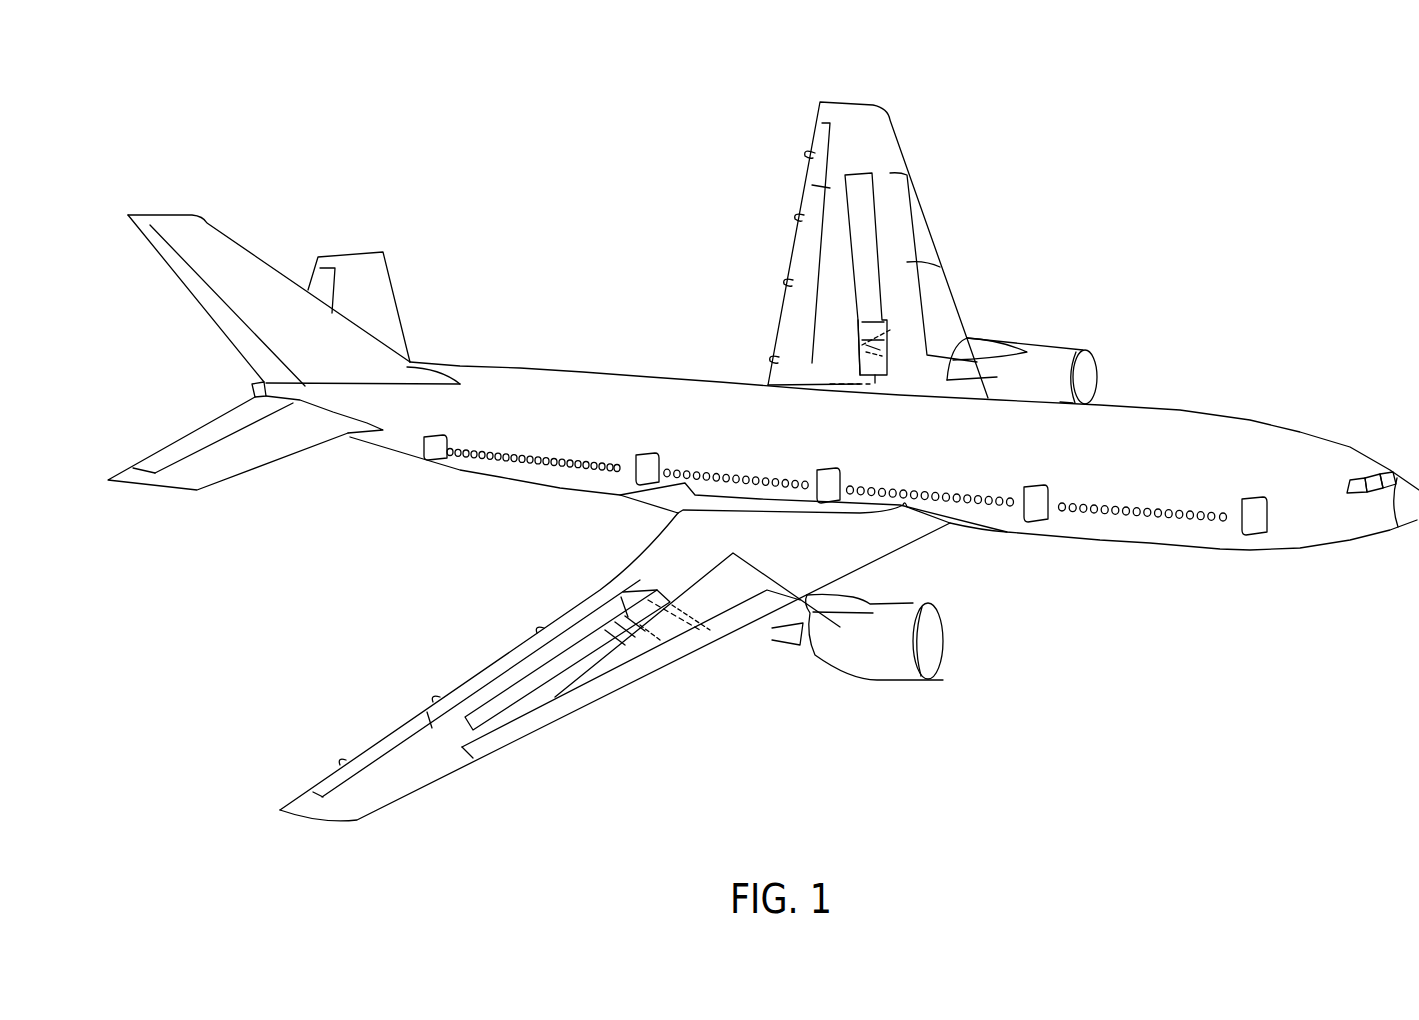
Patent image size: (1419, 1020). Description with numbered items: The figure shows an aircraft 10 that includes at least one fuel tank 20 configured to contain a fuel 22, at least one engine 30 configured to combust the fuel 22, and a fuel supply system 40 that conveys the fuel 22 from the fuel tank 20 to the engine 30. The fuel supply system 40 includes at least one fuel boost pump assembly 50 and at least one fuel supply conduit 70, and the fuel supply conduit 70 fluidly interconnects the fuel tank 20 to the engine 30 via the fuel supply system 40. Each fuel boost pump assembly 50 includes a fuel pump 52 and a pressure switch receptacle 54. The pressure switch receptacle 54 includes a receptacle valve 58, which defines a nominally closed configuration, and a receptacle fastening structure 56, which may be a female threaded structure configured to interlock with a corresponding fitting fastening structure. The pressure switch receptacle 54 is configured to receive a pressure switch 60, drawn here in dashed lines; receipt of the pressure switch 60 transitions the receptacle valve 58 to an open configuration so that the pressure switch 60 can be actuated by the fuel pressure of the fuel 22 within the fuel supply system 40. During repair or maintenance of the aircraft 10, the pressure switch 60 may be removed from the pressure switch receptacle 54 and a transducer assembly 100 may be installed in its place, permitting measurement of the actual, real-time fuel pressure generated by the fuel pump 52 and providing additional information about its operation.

The aircraft 10 is at (208, 58).
The fuel tank 20 is at (877, 218).
The fuel 22 is at (868, 250).
The engine 30 is at (1060, 342).
The fuel supply system 40 is at (857, 363).
The fuel boost pump assembly 50 is at (872, 320).
The fuel pump 52 is at (867, 340).
The pressure switch receptacle 54 is at (873, 343).
The receptacle fastening structure 56 is at (878, 352).
The receptacle valve 58 is at (885, 323).
The pressure switch 60 is at (883, 347).
The fuel supply conduit 70 is at (980, 337).
The transducer assembly 100 is at (870, 373).